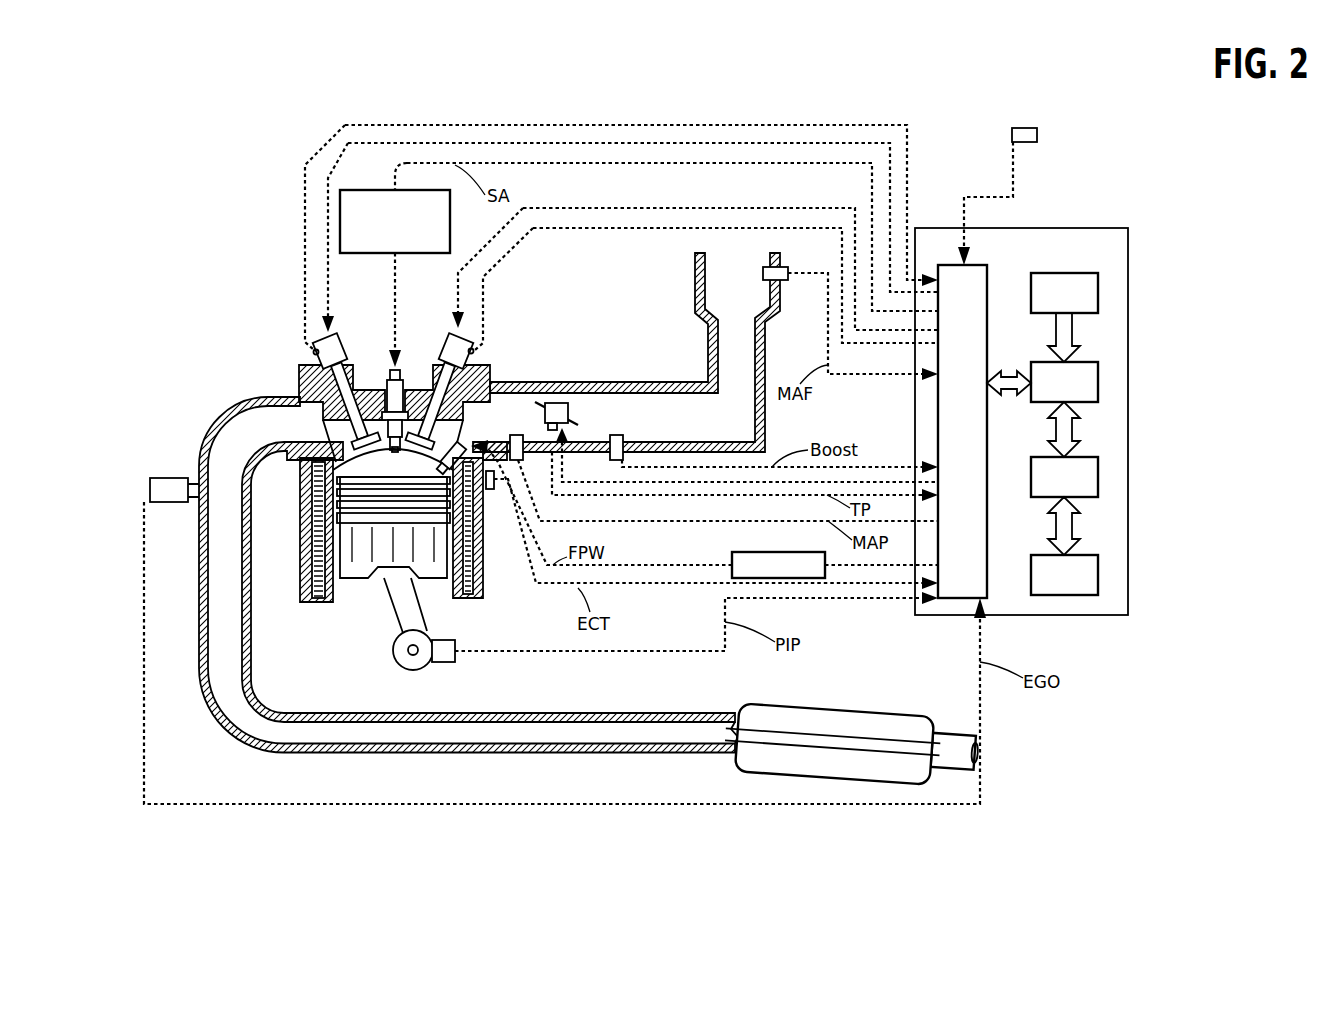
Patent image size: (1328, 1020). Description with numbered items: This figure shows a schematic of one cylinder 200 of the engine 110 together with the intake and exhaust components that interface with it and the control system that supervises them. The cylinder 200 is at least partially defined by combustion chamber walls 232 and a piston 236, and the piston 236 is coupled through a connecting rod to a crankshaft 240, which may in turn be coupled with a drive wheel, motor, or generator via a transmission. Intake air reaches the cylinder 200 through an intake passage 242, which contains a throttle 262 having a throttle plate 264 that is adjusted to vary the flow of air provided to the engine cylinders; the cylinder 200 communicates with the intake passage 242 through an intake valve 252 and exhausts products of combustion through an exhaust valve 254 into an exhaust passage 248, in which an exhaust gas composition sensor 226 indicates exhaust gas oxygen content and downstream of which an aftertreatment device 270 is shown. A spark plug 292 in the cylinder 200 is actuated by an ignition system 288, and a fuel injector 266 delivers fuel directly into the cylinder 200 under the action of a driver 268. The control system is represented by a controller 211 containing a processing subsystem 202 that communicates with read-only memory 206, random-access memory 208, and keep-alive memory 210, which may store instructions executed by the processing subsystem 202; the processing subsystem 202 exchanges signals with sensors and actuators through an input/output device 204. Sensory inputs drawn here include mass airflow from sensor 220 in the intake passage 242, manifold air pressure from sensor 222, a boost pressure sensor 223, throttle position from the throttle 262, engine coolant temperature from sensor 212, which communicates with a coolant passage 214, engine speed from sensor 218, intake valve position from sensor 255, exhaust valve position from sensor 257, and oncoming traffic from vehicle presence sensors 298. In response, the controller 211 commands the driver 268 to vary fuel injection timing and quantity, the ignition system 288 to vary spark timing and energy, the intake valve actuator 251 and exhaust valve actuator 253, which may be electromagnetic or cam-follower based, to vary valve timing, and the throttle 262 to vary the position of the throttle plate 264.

The engine 110 is at (234, 318).
The cylinder 200 is at (300, 487).
The processing subsystem (CPU) 202 is at (1098, 377).
The input/output device 204 is at (987, 273).
The read-only memory (ROM) 206 is at (1098, 292).
The random-access memory (RAM) 208 is at (1098, 473).
The keep-alive memory (KAM) 210 is at (1098, 572).
The controller 211 is at (1118, 243).
The engine coolant temperature sensor 212 is at (492, 492).
The coolant passage 214 is at (470, 560).
The engine speed sensor 218 is at (443, 663).
The mass airflow sensor 220 is at (785, 266).
The manifold air pressure sensor 222 is at (520, 461).
The boost pressure sensor 223 is at (610, 450).
The exhaust gas composition sensor 226 is at (150, 483).
The combustion chamber walls 232 is at (343, 592).
The piston 236 is at (378, 580).
The crankshaft 240 is at (405, 668).
The intake passage 242 is at (752, 299).
The exhaust passage 248 is at (286, 435).
The intake valve actuator 251 is at (446, 340).
The intake valve 252 is at (412, 432).
The exhaust valve actuator 253 is at (335, 340).
The exhaust valve 254 is at (300, 393).
The intake valve position sensor 255 is at (472, 350).
The exhaust valve position sensor 257 is at (314, 350).
The throttle 262 is at (555, 402).
The throttle plate 264 is at (537, 400).
The fuel injector 266 is at (455, 445).
The driver 268 is at (732, 553).
The emission control device 270 is at (895, 713).
The ignition system 288 is at (355, 190).
The spark plug 292 is at (389, 398).
The vehicle presence sensors 298 is at (1038, 137).